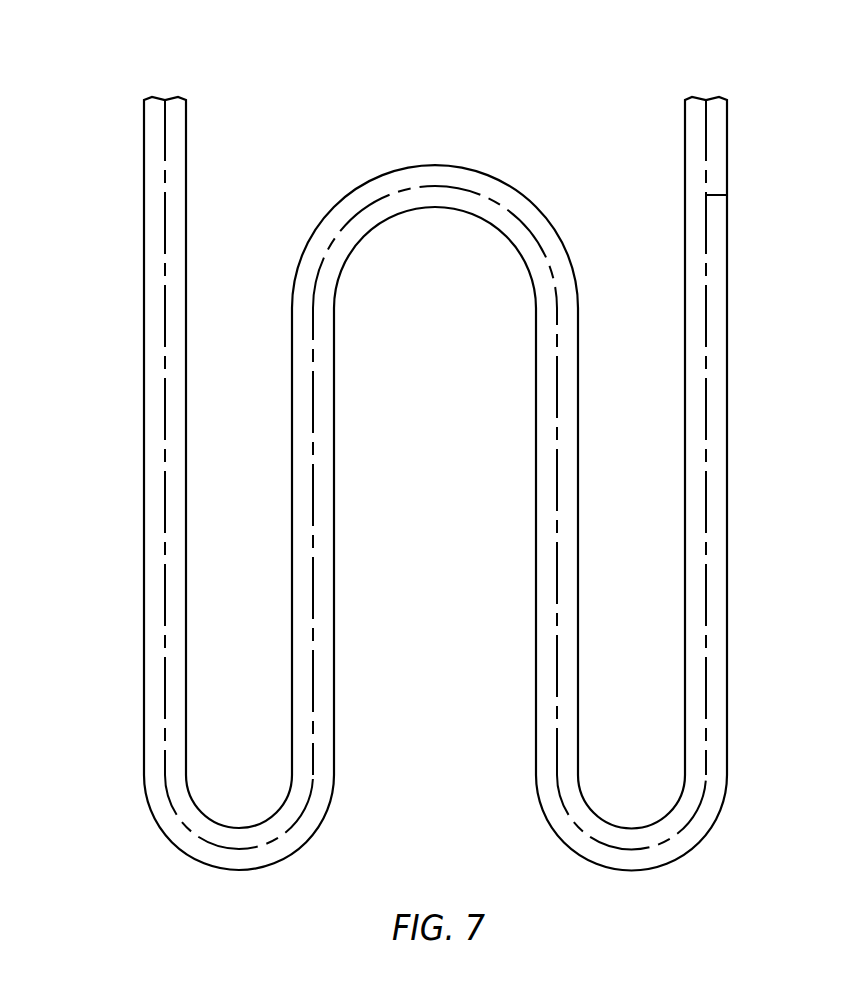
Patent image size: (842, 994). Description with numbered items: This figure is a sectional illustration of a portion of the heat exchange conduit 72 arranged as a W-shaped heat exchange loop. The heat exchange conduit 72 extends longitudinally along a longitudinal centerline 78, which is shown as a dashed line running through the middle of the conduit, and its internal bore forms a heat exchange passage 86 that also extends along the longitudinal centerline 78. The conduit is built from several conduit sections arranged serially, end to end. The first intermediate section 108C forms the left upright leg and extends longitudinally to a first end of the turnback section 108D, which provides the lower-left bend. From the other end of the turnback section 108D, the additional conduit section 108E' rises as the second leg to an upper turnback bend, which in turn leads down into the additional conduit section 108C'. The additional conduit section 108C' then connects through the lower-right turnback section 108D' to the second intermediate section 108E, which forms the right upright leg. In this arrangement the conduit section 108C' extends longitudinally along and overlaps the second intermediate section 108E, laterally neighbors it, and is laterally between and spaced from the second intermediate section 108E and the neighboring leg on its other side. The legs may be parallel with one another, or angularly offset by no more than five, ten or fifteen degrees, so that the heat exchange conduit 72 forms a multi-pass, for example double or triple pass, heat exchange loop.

The heat exchange conduit 72 is at (437, 473).
The longitudinal centerline 78 is at (743, 150).
The heat exchange passage 86 is at (697, 130).
The first intermediate section 108C is at (123, 436).
The additional conduit section 108E' is at (278, 541).
The additional conduit section 108C' is at (594, 539).
The second intermediate section 108E is at (741, 401).
The turnback section 108D is at (227, 847).
The additional conduit section 108D' is at (648, 847).